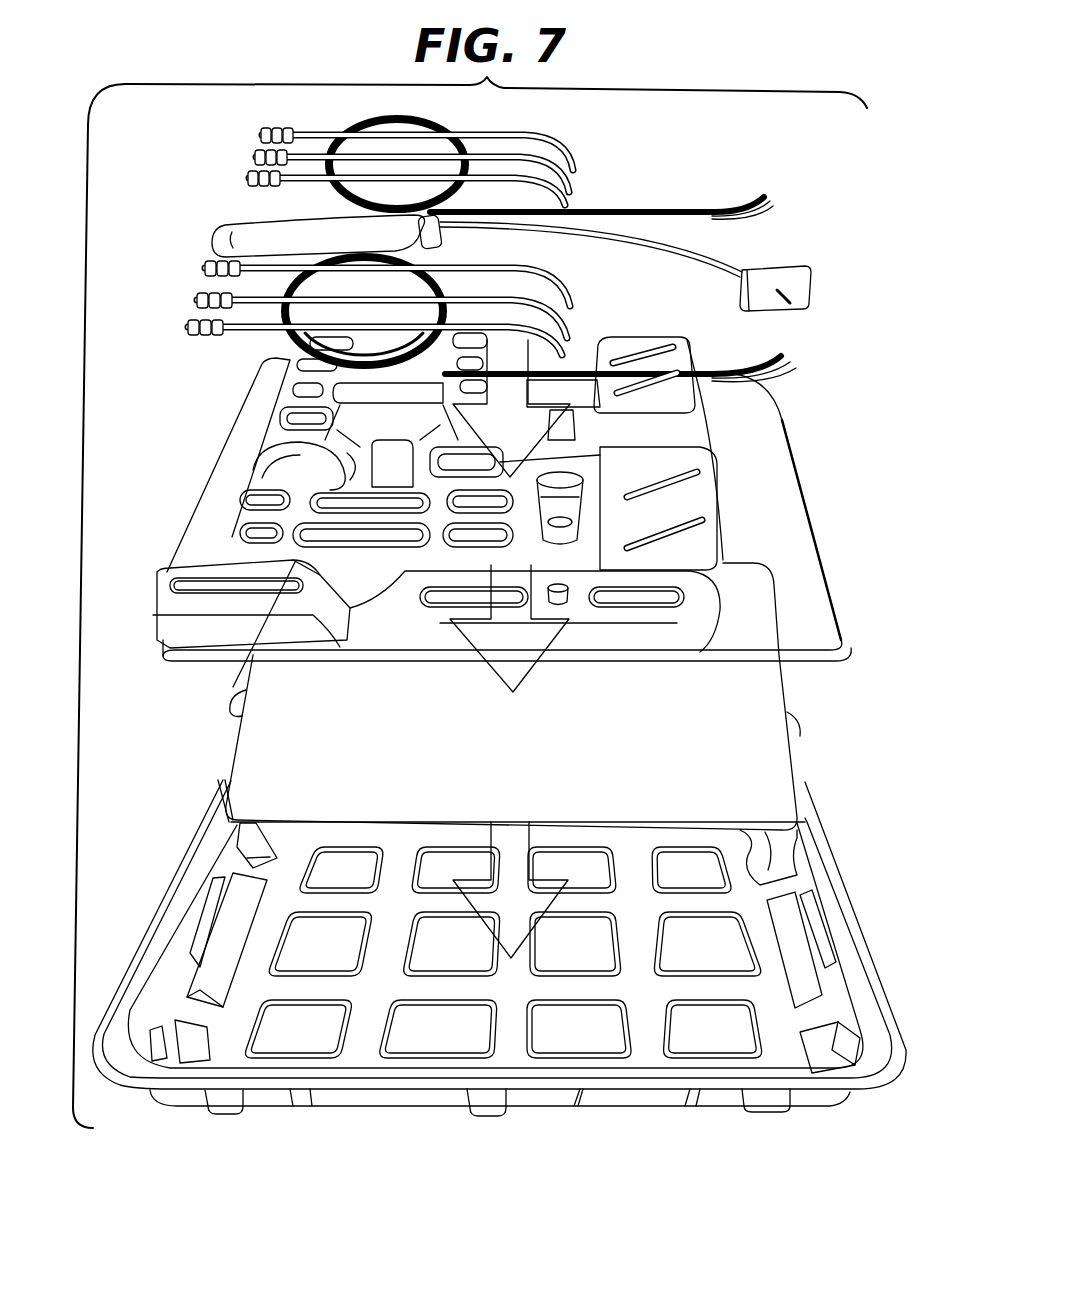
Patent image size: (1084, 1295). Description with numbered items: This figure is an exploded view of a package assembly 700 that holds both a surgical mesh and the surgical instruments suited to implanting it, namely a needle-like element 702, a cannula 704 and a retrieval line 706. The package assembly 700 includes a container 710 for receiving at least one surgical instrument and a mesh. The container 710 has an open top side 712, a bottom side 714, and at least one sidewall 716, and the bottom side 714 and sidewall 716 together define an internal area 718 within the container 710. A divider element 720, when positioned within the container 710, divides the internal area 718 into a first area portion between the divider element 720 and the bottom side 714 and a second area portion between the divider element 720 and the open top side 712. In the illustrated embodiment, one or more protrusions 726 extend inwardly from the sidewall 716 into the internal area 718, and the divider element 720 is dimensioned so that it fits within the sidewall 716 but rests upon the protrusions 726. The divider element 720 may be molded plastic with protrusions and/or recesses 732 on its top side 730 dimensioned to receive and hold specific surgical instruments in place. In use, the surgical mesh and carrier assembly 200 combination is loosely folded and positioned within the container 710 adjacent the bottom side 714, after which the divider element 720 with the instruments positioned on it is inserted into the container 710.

The package assembly 700 is at (870, 578).
The needle-like element 702 is at (708, 256).
The cannula 704 is at (558, 143).
The retrieval line 706 is at (688, 208).
The container 710 is at (171, 888).
The open top side 712 is at (231, 858).
The bottom side 714 is at (410, 1106).
The sidewall 716 is at (850, 995).
The internal area 718 is at (266, 953).
The divider element 720 is at (778, 470).
The protrusions 726 is at (202, 982).
The top side 730 is at (227, 503).
The recesses 732 is at (283, 486).
The carrier assembly 200 is at (534, 751).